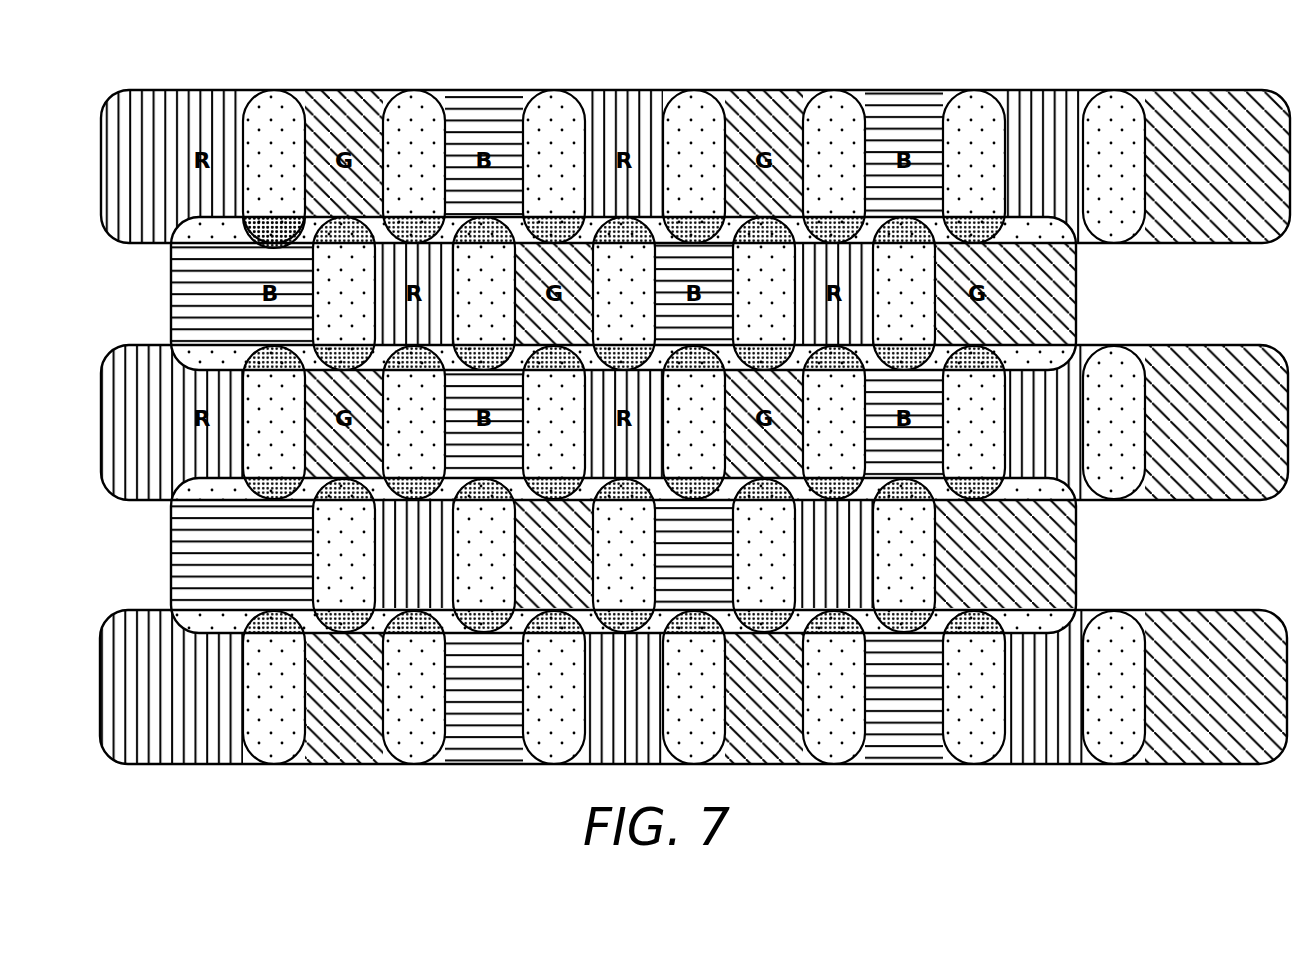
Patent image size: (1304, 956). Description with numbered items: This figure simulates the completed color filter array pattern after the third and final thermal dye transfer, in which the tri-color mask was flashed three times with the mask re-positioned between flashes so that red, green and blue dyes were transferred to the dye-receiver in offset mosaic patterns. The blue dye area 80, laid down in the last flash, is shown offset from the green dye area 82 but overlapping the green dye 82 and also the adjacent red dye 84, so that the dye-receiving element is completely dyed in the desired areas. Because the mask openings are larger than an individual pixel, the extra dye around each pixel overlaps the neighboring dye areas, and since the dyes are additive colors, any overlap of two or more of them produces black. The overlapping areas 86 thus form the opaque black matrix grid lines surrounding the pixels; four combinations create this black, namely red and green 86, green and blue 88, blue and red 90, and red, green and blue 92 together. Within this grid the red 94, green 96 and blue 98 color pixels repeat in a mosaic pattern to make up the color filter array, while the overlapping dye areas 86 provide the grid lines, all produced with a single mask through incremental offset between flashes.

The blue dye area 80 is at (501, 120).
The green dye area 82 is at (770, 132).
The red dye 84 is at (632, 134).
The overlapping areas 86 is at (702, 132).
The green and blue overlap 88 is at (857, 132).
The blue and red overlap 90 is at (564, 132).
The red, green and blue overlap 92 is at (264, 243).
The red color pixel 94 is at (402, 332).
The green color pixel 96 is at (522, 262).
The blue color pixel 98 is at (700, 266).